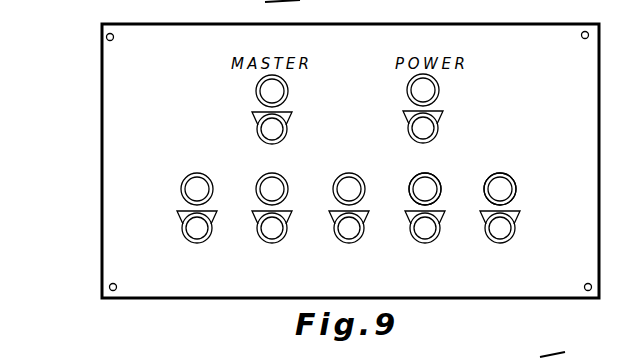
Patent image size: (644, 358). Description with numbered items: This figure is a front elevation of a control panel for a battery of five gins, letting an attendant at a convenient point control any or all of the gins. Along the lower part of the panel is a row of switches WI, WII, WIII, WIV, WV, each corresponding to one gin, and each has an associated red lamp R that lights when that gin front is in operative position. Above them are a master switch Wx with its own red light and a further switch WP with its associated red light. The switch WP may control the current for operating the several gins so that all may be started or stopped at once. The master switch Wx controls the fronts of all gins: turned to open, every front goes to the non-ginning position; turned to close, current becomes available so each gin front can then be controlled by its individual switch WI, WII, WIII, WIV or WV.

The master switch Wx is at (300, 117).
The switch WP is at (456, 117).
The red lamp R is at (441, 174).
The switch WV is at (186, 246).
The switch WIV is at (280, 246).
The switch WIII is at (358, 246).
The switch WII is at (446, 243).
The switch WI is at (527, 218).